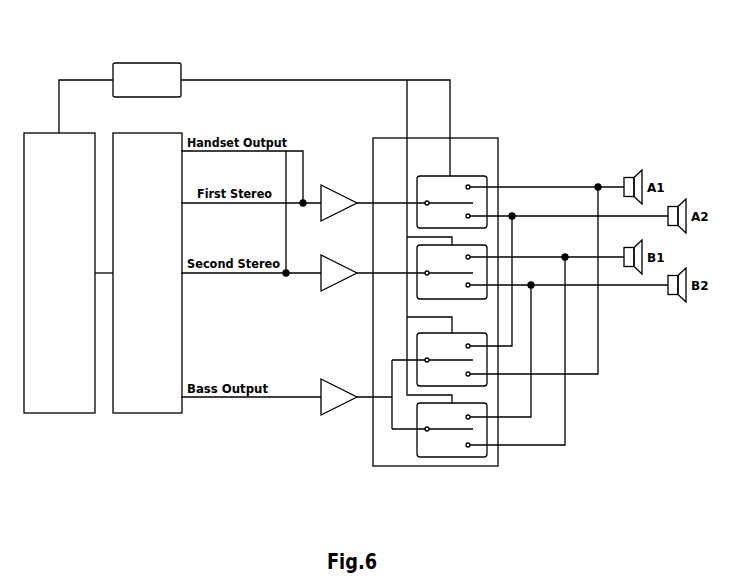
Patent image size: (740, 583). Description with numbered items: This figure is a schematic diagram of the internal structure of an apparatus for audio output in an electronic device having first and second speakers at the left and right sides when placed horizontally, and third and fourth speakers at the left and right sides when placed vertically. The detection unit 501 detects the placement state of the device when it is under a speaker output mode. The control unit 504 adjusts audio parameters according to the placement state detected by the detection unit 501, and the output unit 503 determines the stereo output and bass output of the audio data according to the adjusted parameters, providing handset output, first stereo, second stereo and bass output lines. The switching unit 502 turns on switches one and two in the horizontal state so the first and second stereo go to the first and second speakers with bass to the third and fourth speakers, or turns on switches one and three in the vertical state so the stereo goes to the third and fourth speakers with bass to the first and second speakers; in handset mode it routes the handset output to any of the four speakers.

The detection unit 501 is at (150, 63).
The switching unit 502 is at (478, 138).
The output unit 503 is at (160, 133).
The control unit 504 is at (68, 133).